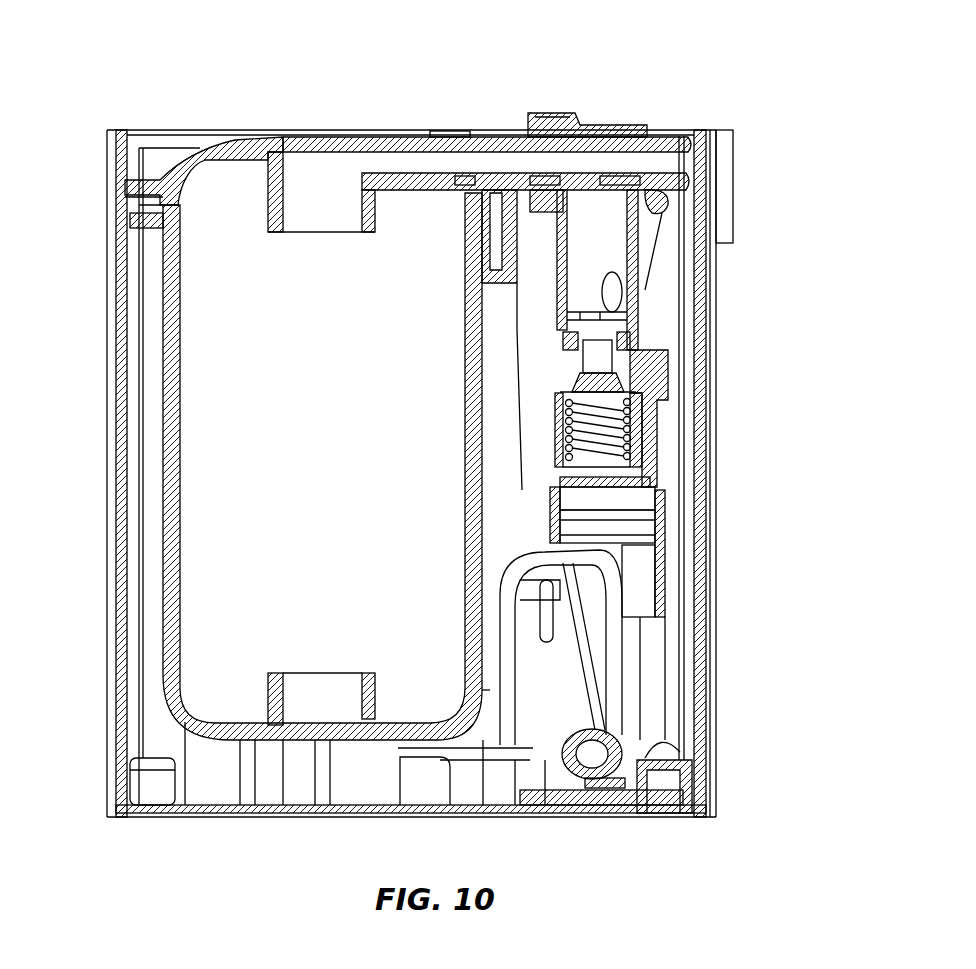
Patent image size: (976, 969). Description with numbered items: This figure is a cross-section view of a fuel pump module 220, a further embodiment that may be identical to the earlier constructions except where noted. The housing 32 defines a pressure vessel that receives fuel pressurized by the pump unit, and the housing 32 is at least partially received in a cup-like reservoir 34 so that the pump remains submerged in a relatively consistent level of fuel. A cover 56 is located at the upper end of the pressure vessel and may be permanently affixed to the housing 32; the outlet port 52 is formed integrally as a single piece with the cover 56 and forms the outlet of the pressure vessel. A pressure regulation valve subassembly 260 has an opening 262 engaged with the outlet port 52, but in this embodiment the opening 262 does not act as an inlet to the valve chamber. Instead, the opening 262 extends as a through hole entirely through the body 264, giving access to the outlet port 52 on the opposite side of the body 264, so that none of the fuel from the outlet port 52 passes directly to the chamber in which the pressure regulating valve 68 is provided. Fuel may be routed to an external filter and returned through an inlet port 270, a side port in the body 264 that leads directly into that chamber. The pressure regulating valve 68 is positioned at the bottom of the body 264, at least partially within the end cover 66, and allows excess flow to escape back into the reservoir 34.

The fuel pump module 220 is at (103, 85).
The reservoir 34 is at (120, 411).
The housing 32 is at (167, 262).
The cover 56 is at (236, 155).
The outlet port 52 is at (673, 138).
The opening 262 is at (625, 138).
The inlet port 270 is at (665, 203).
The body 264 is at (640, 302).
The pressure regulating valve 68 is at (583, 372).
The end cover 66 is at (648, 421).
The pressure regulation valve subassembly 260 is at (655, 331).